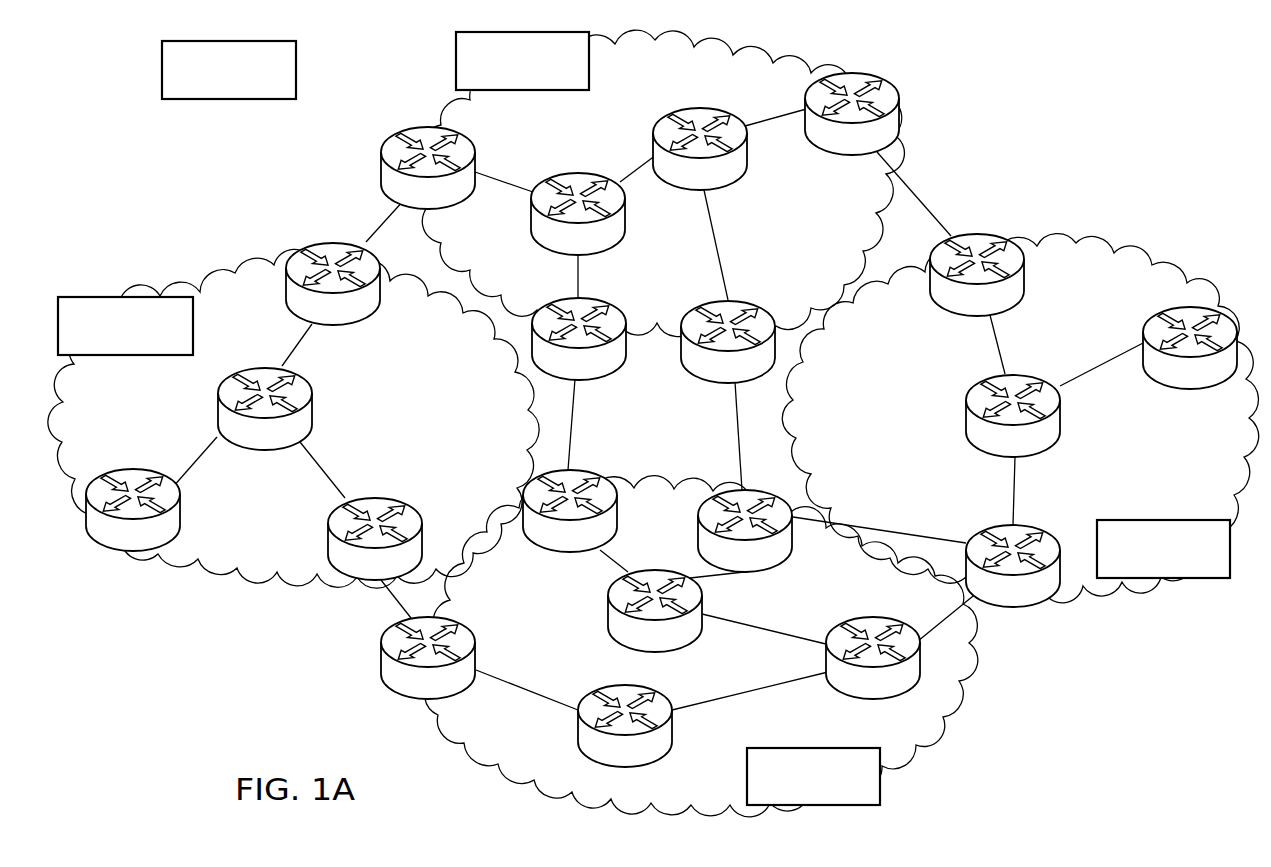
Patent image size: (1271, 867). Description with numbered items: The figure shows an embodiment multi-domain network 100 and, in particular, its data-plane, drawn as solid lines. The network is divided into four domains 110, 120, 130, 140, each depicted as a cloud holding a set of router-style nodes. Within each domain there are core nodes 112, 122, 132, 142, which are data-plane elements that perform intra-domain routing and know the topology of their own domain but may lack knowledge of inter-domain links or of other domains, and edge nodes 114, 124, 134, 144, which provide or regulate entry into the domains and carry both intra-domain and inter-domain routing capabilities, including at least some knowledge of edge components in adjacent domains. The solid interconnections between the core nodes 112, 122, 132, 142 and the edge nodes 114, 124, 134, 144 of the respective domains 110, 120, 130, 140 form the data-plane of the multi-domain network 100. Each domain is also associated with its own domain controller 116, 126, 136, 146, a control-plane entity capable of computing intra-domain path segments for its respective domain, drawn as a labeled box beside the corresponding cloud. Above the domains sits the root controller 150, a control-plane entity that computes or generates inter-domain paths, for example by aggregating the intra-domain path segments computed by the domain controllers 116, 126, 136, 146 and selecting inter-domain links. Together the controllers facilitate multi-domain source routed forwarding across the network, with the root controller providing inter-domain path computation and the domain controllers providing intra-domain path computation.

The multi-domain network 100 is at (1054, 96).
The domain 110 is at (399, 404).
The core node 112 is at (220, 405).
The edge node 114 is at (305, 248).
The domain controller 116 is at (122, 297).
The domain 120 is at (812, 223).
The core node 122 is at (578, 174).
The edge node 124 is at (402, 131).
The domain controller 126 is at (456, 57).
The domain 130 is at (528, 601).
The core node 132 is at (607, 613).
The edge node 134 is at (586, 471).
The domain controller 136 is at (880, 773).
The domain 140 is at (900, 431).
The core node 142 is at (1060, 420).
The edge node 144 is at (962, 235).
The domain controller 146 is at (1165, 578).
The root controller 150 is at (162, 67).